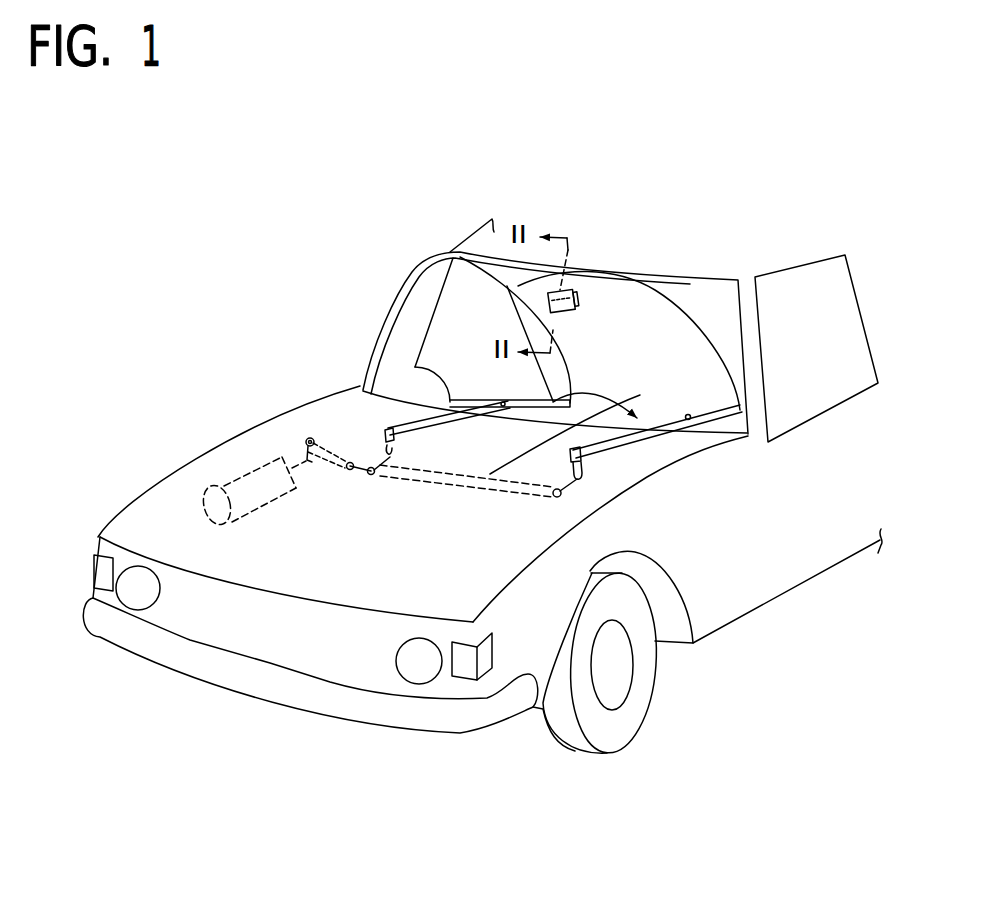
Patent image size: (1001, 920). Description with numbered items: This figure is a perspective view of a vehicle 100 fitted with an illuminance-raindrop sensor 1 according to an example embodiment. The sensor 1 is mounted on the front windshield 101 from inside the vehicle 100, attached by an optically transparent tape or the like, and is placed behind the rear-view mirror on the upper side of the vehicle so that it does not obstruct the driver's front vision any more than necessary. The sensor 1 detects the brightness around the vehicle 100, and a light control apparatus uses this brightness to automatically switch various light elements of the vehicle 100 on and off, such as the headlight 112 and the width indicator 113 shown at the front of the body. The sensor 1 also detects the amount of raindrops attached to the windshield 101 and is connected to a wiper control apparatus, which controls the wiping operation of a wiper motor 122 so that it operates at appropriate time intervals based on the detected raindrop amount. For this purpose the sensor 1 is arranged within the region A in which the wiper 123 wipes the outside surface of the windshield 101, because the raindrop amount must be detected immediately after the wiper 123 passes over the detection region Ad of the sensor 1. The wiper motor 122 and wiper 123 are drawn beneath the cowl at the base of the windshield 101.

The illuminance-raindrop sensor 1 is at (542, 296).
The vehicle 100 is at (384, 247).
The front windshield 101 is at (422, 300).
The region A is at (465, 257).
The detection region Ad is at (552, 314).
The headlight 112 is at (140, 592).
The width indicator 113 is at (100, 572).
The wiper motor 122 is at (283, 492).
The wiper 123 is at (530, 412).